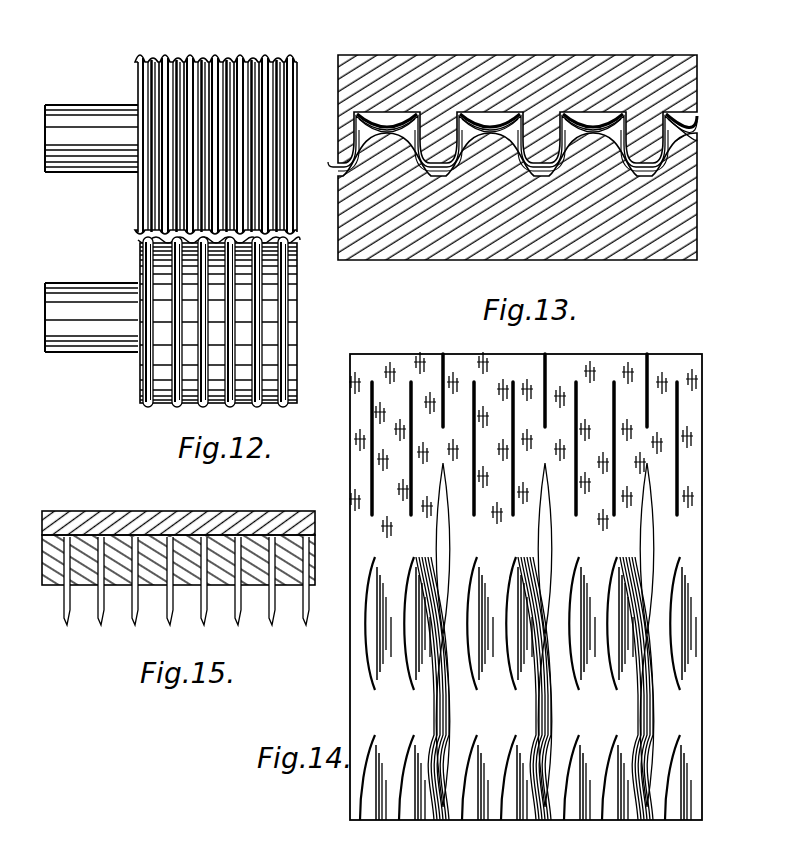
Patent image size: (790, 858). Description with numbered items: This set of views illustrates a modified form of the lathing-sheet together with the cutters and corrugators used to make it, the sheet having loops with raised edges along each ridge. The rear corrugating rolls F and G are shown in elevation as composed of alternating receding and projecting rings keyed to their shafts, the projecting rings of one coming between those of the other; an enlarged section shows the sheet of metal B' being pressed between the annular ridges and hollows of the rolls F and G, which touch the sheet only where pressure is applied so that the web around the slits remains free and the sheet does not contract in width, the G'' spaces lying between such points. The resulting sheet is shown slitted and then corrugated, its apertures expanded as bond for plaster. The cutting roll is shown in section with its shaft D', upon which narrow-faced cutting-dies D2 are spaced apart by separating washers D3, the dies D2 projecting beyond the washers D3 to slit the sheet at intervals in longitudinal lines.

In FIG. 12, the upper corrugating roll F is at (139, 188).
In FIG. 13, the upper corrugating roll F is at (704, 76).
In FIG. 12, the sheet of metal B' is at (203, 233).
In FIG. 13, the sheet of metal B' is at (526, 131).
In FIG. 12, the lower corrugating roll G is at (171, 322).
In FIG. 13, the lower corrugating roll G is at (529, 196).
In FIG. 13, the curved filler pieces in die cavities G'' is at (522, 145).
In FIG. 15, the shaft of upper cutting roll D' is at (166, 523).
In FIG. 15, the separating ring or washer D3 is at (44, 578).
In FIG. 15, the cutting-die D2 is at (66, 605).